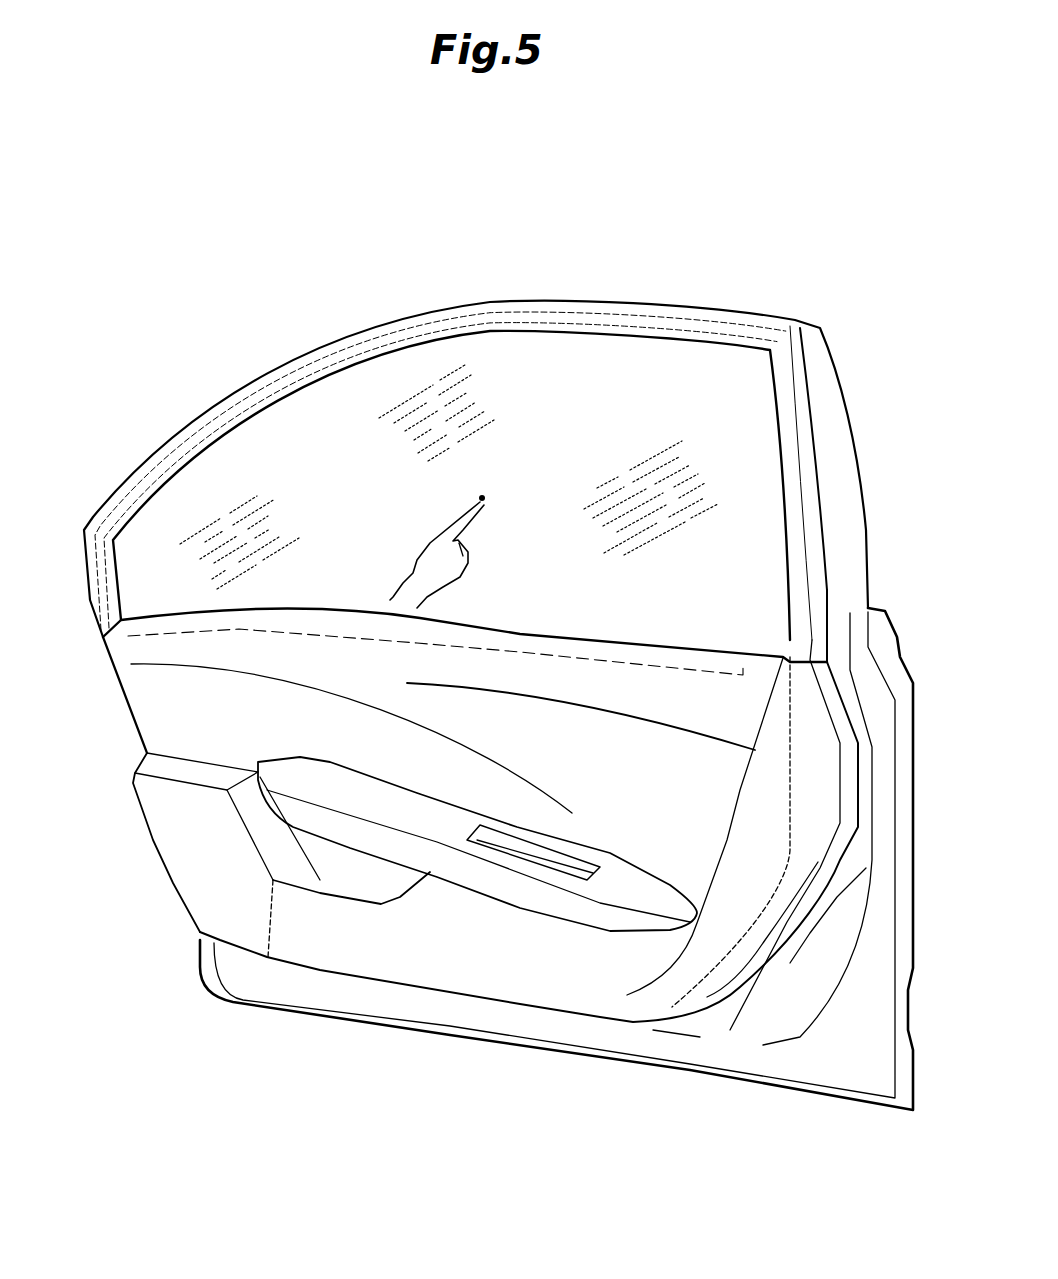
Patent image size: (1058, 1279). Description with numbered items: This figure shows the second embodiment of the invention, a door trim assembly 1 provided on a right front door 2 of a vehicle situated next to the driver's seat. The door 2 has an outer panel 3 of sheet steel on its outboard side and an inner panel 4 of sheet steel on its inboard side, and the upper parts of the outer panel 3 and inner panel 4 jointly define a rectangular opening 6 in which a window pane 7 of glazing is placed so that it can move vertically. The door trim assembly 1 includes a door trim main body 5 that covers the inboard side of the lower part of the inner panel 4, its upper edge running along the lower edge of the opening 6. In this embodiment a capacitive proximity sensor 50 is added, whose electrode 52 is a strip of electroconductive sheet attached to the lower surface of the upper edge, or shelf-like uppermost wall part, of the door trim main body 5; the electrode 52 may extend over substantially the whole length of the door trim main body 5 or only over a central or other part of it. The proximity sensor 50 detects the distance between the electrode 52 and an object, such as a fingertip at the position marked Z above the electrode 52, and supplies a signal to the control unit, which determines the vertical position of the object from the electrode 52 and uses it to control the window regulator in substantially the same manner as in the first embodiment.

The door trim assembly 1 is at (168, 692).
The right front door 2 is at (715, 305).
The outer panel 3 is at (921, 1002).
The inner panel 4 is at (755, 970).
The door trim main body 5 is at (214, 854).
The rectangular opening 6 is at (478, 342).
The window pane 7 is at (327, 430).
The capacitive proximity sensor 50 is at (338, 590).
The electrode 52 is at (518, 640).
The touch position Z is at (443, 538).